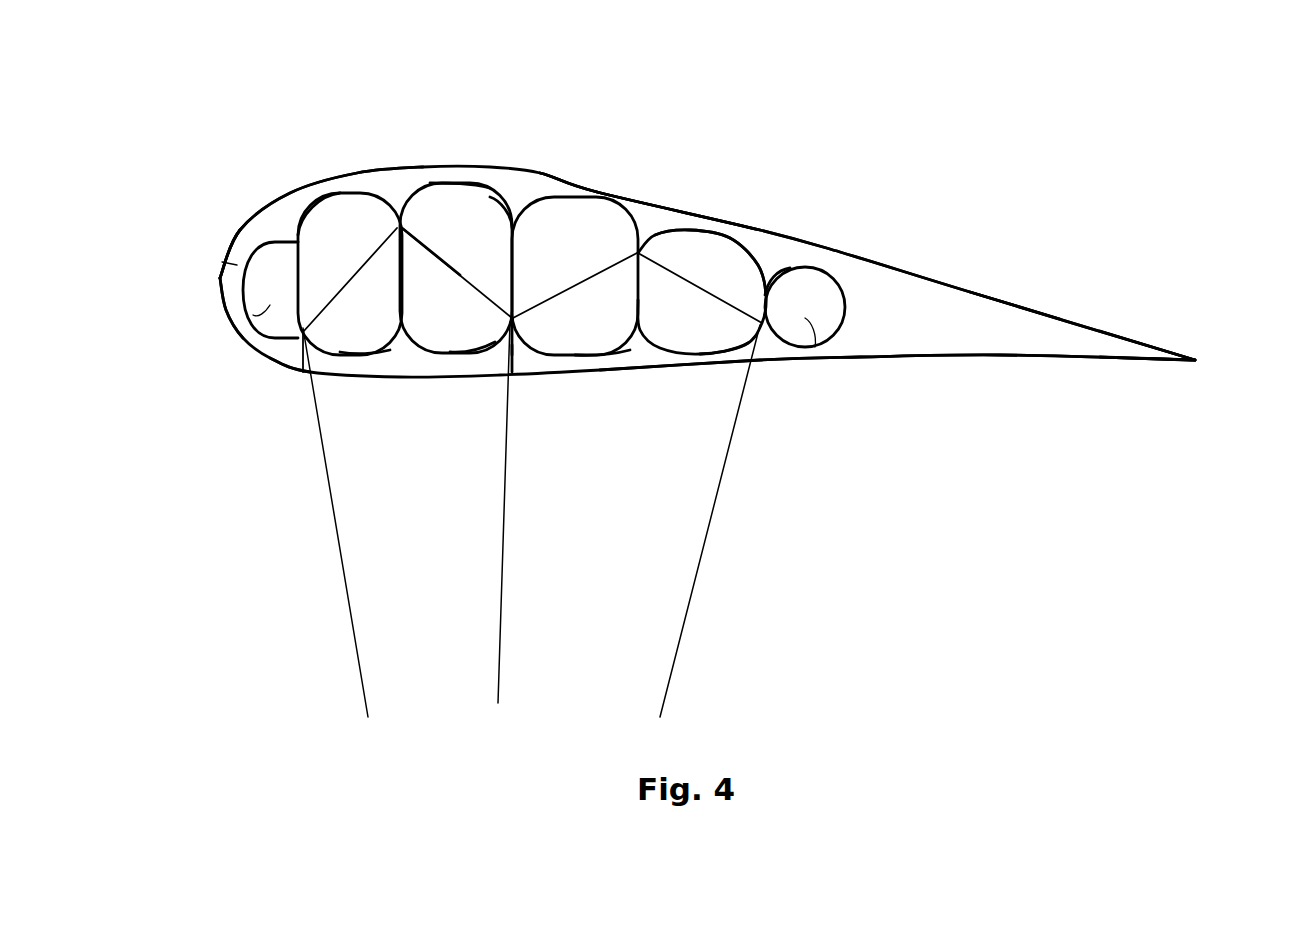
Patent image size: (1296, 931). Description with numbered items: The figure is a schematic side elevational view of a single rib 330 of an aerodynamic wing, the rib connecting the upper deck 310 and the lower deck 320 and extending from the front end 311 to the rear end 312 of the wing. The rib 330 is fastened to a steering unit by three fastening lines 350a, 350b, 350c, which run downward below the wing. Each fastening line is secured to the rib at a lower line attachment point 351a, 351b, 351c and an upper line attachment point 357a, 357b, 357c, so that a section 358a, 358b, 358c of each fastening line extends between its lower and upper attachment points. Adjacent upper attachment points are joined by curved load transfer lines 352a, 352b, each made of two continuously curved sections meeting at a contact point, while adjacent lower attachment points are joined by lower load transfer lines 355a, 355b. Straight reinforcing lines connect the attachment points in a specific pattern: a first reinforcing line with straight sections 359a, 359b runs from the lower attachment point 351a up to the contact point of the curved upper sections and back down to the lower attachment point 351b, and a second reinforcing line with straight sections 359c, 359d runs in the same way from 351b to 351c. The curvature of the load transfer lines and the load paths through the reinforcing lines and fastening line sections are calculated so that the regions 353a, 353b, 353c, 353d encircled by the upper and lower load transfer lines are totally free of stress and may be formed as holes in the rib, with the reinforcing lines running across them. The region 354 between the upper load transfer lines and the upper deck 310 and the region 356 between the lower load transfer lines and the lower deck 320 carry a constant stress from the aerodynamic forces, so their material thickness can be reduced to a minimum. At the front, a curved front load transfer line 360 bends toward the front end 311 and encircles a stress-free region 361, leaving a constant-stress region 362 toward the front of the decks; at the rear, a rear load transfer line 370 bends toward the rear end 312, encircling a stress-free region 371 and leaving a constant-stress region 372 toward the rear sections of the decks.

The upper deck 310 is at (837, 250).
The front end 311 is at (300, 293).
The rear end 312 is at (1195, 360).
The lower deck 320 is at (778, 360).
The rib 330 is at (890, 303).
The fastening line 350a is at (331, 517).
The fastening line 350b is at (502, 513).
The fastening line 350c is at (707, 523).
The lower line attachment point 351a is at (288, 340).
The lower line attachment point 351b is at (483, 350).
The lower line attachment point 351c is at (730, 340).
The curved load transfer line 352a is at (423, 193).
The curved load transfer line 352b is at (657, 237).
The region 353a is at (303, 372).
The region 353b is at (467, 203).
The region 353c is at (530, 357).
The region 353d is at (688, 243).
The region 354 is at (550, 192).
The lower load transfer line 355a is at (417, 353).
The lower load transfer line 355b is at (657, 348).
The region 356 is at (507, 355).
The upper line attachment point 357a is at (320, 253).
The upper line attachment point 357b is at (512, 228).
The upper line attachment point 357c is at (765, 270).
The fastening line section 358a is at (237, 265).
The fastening line section 358b is at (510, 278).
The fastening line section 358c is at (762, 293).
The straight reinforcing line section 359a is at (350, 266).
The straight reinforcing line section 359b is at (450, 272).
The straight reinforcing line section 359c is at (572, 288).
The straight reinforcing line section 359d is at (698, 285).
The curved front load transfer line 360 is at (267, 305).
The region 361 is at (262, 312).
The region 362 is at (222, 262).
The rear load transfer line 370 is at (848, 320).
The region 371 is at (813, 330).
The region 372 is at (953, 330).